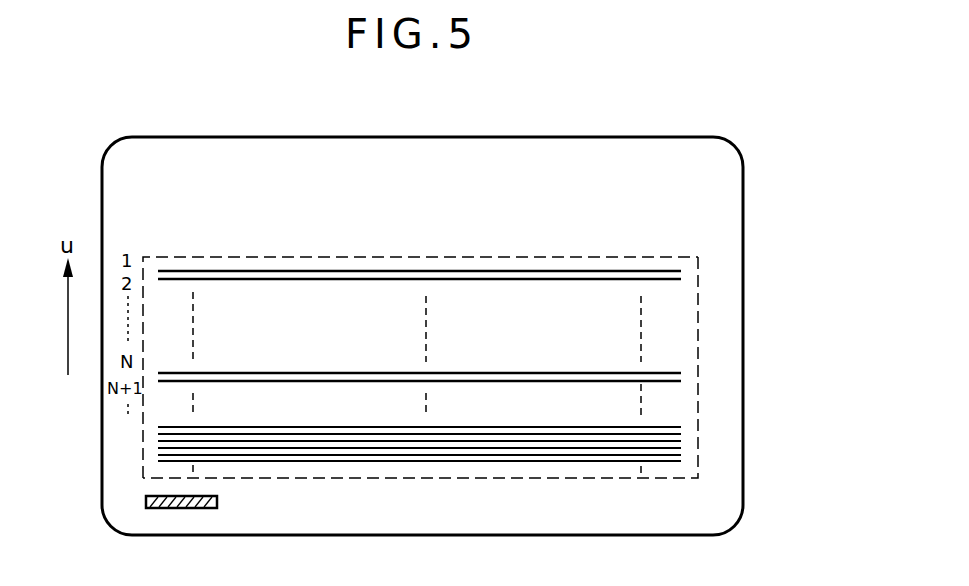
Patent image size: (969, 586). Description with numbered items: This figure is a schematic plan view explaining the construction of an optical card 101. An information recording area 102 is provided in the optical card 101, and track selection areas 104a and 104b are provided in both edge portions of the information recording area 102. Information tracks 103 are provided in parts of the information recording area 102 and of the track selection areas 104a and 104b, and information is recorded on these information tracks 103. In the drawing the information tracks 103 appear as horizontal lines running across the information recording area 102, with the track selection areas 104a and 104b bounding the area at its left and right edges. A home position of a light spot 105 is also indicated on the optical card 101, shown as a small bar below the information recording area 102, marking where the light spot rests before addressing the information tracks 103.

The optical card 101 is at (743, 243).
The information recording area 102 is at (370, 293).
The information tracks 103 is at (657, 373).
The track selection area 104a is at (163, 409).
The track selection area 104b is at (684, 476).
The home position of a light spot 105 is at (202, 508).